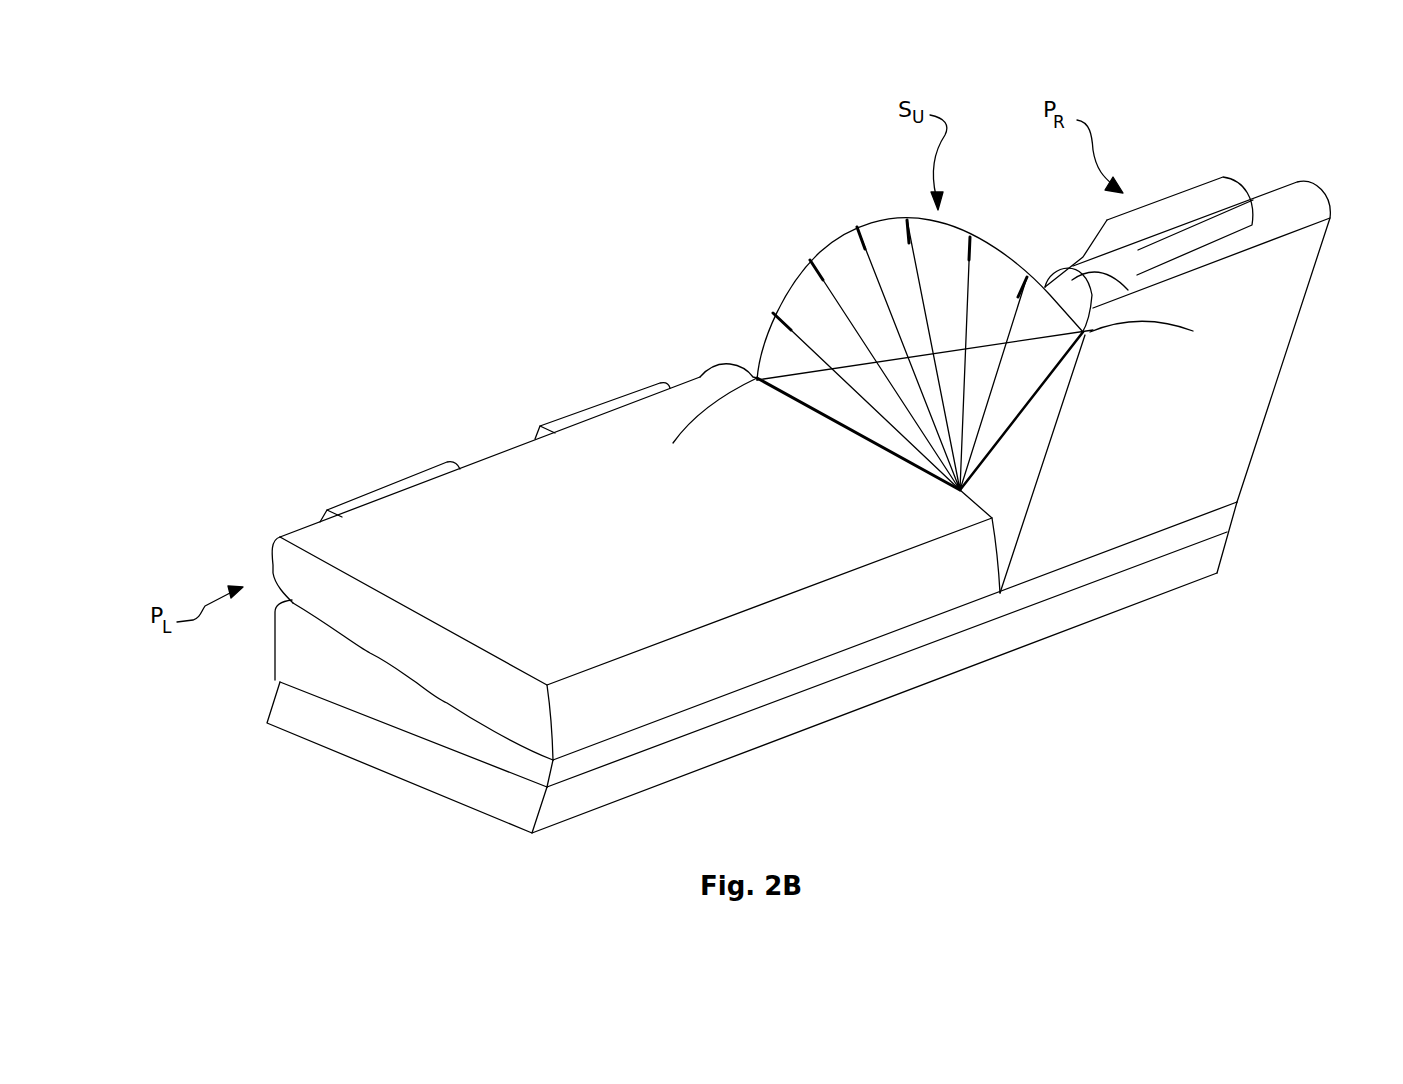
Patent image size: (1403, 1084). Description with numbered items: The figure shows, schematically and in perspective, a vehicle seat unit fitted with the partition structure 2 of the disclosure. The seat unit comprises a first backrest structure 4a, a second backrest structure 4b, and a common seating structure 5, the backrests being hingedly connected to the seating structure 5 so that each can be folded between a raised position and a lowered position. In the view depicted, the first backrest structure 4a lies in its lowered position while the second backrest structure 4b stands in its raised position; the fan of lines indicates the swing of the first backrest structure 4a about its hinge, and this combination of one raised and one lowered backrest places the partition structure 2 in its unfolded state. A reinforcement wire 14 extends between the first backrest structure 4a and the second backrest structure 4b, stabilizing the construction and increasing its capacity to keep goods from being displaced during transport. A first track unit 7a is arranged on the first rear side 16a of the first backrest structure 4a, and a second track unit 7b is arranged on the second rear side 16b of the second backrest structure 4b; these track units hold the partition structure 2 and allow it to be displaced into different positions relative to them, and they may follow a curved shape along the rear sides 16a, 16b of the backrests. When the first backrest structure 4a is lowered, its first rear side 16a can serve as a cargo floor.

The partition structure 2 is at (873, 217).
The first backrest structure 4a is at (435, 657).
The second backrest structure 4b is at (1200, 430).
The common seating structure 5 is at (351, 682).
The first track unit 7a is at (717, 395).
The second track unit 7b is at (1150, 323).
The reinforcement wire 14 is at (883, 357).
The first rear side 16a is at (767, 517).
The second rear side 16b is at (1232, 353).